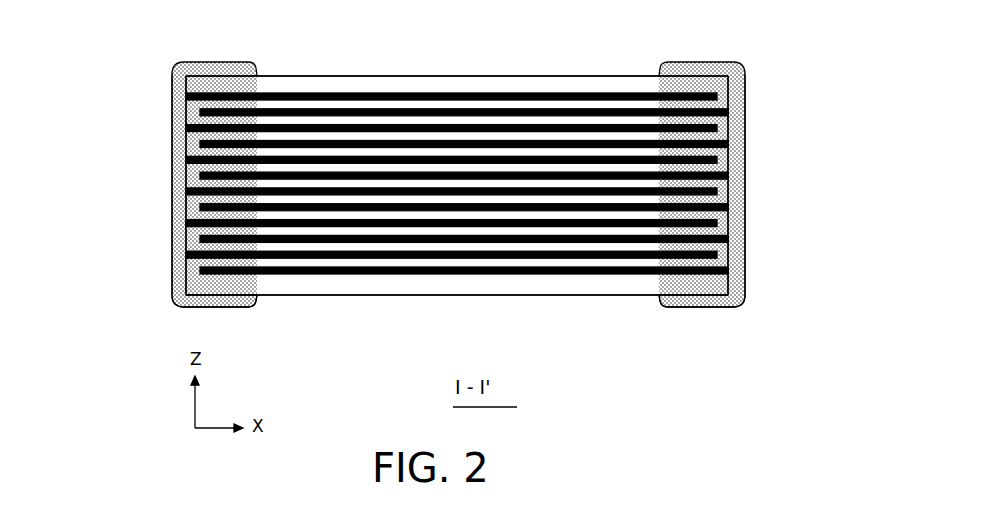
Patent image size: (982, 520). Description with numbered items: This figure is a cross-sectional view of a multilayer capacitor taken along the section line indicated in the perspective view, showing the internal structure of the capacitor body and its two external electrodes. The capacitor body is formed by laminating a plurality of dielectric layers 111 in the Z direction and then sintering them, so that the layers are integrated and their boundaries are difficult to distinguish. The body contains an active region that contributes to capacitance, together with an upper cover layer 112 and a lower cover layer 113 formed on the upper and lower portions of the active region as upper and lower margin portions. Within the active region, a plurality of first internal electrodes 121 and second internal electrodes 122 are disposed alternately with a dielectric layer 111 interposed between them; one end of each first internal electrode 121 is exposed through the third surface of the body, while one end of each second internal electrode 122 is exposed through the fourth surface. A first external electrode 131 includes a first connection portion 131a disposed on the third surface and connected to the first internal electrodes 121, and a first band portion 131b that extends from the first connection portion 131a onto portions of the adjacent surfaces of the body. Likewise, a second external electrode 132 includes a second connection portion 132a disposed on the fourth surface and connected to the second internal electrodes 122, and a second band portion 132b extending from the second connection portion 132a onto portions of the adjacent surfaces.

The dielectric layer 111 is at (180, 177).
The upper cover layer 112 is at (527, 84).
The lower cover layer 113 is at (530, 288).
The first internal electrode 121 is at (174, 135).
The second internal electrode 122 is at (746, 143).
The first external electrode 131 is at (146, 187).
The first connection portion 131a is at (174, 256).
The first band portion 131b is at (195, 306).
The second external electrode 132 is at (771, 187).
The second connection portion 132a is at (746, 250).
The second band portion 132b is at (730, 308).